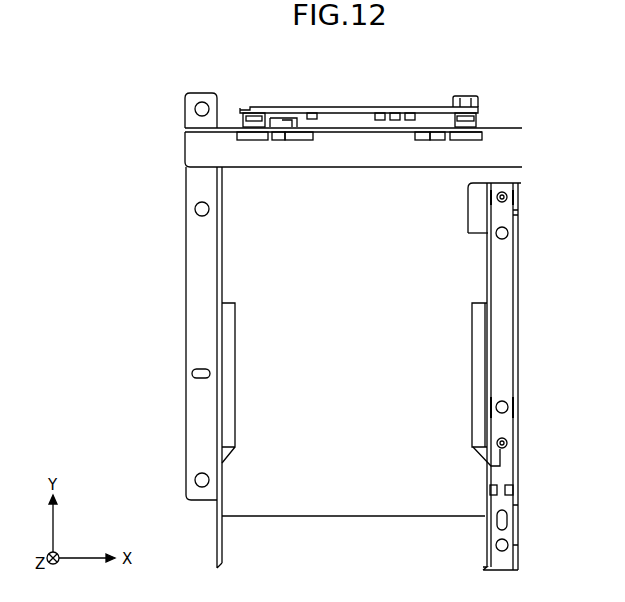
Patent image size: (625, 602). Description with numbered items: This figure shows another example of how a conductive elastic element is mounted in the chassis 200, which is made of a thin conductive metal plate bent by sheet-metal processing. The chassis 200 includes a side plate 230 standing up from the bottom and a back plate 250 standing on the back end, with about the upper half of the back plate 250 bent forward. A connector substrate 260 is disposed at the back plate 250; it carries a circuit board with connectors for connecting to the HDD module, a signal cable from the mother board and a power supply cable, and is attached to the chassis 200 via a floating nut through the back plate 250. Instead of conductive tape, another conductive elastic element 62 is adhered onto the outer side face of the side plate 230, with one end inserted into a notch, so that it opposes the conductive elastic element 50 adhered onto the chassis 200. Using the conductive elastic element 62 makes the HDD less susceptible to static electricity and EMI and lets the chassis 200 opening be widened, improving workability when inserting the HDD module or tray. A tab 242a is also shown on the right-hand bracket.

The chassis 200 is at (160, 108).
The back plate 250 is at (200, 145).
The connector substrate 260 is at (320, 98).
The side plate 230 is at (200, 268).
The conductive elastic element 62 is at (229, 406).
The conductive elastic element 50 is at (478, 382).
The tab 242a is at (490, 283).